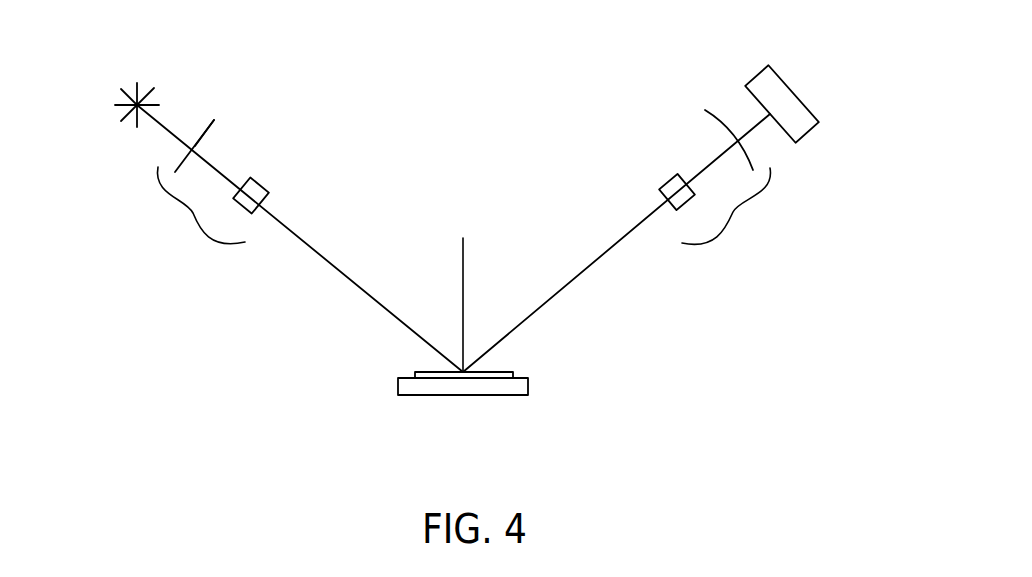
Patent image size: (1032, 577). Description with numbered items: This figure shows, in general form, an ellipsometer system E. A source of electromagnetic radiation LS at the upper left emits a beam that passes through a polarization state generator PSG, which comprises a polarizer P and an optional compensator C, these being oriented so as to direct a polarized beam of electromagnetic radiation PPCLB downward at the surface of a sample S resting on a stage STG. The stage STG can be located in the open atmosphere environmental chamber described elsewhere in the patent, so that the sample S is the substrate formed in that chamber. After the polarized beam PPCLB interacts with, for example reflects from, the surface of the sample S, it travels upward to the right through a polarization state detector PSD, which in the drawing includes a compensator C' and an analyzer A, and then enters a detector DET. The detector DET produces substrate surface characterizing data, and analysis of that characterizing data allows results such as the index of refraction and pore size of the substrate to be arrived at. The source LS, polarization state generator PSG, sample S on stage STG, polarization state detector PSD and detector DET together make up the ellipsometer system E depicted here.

The source of electromagnetic radiation LS is at (135, 80).
The polarizer P is at (213, 118).
The polarized beam of electromagnetic radiation PPCLB is at (225, 147).
The compensator C is at (286, 185).
The polarization state generator PSG is at (201, 209).
The ellipsometer system E is at (498, 142).
The sample S is at (518, 370).
The stage STG is at (467, 397).
The analyzer A is at (704, 109).
The compensator C' is at (640, 181).
The polarization state detector PSD is at (727, 209).
The detector DET is at (800, 83).